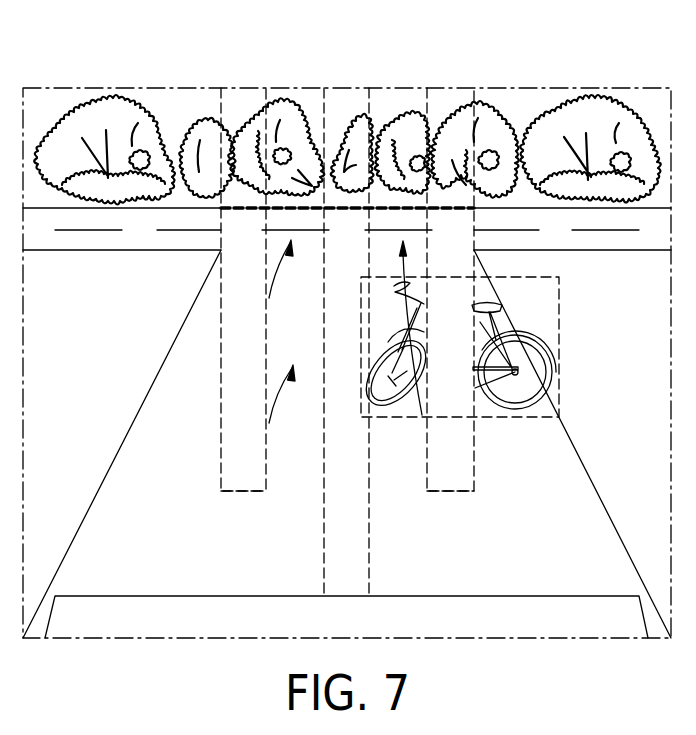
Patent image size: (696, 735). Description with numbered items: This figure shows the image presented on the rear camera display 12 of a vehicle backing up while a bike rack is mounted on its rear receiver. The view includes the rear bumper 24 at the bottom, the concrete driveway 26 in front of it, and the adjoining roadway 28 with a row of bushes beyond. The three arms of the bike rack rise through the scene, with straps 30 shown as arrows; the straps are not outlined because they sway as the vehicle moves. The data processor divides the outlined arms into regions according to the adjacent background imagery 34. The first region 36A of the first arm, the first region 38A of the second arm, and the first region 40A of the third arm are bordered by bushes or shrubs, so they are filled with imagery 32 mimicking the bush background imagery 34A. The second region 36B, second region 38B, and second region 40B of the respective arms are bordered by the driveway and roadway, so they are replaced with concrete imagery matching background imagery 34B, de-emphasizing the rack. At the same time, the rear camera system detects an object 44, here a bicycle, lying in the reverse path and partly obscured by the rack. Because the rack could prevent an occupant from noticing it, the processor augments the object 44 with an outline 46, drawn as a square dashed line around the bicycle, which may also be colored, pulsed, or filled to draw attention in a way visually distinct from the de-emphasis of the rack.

The rear camera display 12 is at (88, 88).
The rear bumper 24 is at (99, 628).
The concrete driveway 26 is at (139, 558).
The roadway 28 is at (102, 240).
The straps 30 is at (269, 296).
The imagery 32 is at (252, 120).
The background imagery 34 is at (192, 118).
The background imagery of bushes or shrubs 34A is at (357, 140).
The background imagery of concrete driveway/roadway 34B is at (236, 418).
The first region of first arm 36A is at (222, 196).
The second region of first arm 36B is at (220, 340).
The first region of second arm 38A is at (372, 92).
The second region of second arm 38B is at (322, 560).
The first region of third arm 40A is at (476, 94).
The second region of third arm 40B is at (475, 447).
The object 44 is at (532, 338).
The outline 46 is at (559, 348).